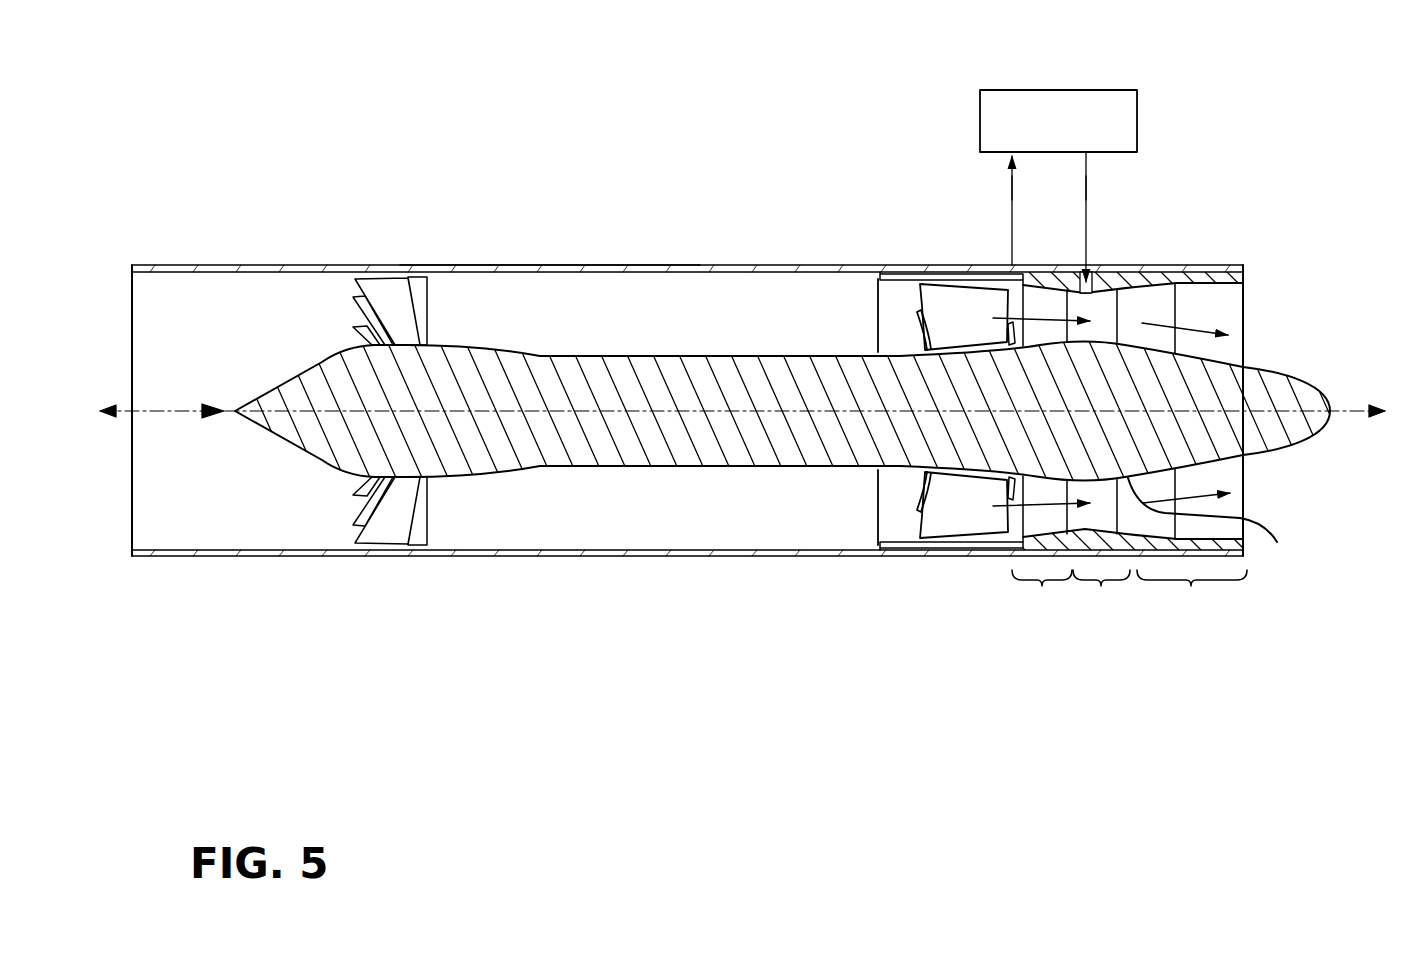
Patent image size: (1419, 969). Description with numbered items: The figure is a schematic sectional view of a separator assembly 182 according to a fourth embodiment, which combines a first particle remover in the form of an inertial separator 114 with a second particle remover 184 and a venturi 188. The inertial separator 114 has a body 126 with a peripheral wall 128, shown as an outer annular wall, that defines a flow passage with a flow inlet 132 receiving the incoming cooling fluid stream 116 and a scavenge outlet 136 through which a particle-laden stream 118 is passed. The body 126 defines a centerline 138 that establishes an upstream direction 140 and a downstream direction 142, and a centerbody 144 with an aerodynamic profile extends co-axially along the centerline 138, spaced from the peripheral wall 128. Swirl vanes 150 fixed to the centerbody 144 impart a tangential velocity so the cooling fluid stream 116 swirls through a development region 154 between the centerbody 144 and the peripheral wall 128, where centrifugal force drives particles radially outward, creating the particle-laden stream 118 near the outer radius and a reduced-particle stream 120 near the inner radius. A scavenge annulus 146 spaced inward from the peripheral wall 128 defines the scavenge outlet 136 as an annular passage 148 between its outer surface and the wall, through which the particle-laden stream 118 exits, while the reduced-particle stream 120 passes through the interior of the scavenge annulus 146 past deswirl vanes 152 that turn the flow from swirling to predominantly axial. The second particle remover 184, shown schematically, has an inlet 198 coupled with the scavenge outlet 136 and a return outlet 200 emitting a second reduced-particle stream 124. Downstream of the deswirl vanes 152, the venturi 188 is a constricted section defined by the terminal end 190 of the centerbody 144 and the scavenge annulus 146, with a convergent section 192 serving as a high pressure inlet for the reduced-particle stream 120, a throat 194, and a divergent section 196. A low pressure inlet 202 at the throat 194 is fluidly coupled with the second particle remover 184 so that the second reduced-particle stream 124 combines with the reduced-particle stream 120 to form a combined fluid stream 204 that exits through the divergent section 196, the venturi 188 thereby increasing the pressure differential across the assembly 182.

The inertial separator 114 is at (183, 263).
The cooling fluid stream 116 is at (187, 402).
The particle-laden stream 118 is at (1010, 204).
The reduced-particle stream 120 is at (1041, 399).
The second reduced-particle stream 124 is at (1089, 204).
The body 126 is at (540, 263).
The peripheral wall 128 is at (652, 557).
The flow inlet 132 is at (128, 326).
The scavenge outlet 136 is at (1001, 262).
The centerline 138 is at (717, 412).
The upstream direction 140 is at (731, 427).
The downstream direction 142 is at (1359, 425).
The centerbody 144 is at (810, 478).
The scavenge annulus 146 is at (966, 551).
The annular passage 148 is at (953, 277).
The swirl vanes 150 is at (346, 312).
The deswirl vanes 152 is at (908, 330).
The development region 154 is at (642, 328).
The assembly 182 is at (229, 133).
The second particle remover 184 is at (1058, 121).
The venturi 188 is at (1150, 298).
The terminal end 190 is at (1218, 521).
The convergent section 192 is at (1042, 595).
The throat 194 is at (1101, 595).
The divergent section 196 is at (1192, 595).
The inlet 198 is at (1009, 153).
The return outlet 200 is at (1089, 159).
The low pressure inlet 202 is at (1100, 279).
The combined fluid stream 204 is at (1188, 402).